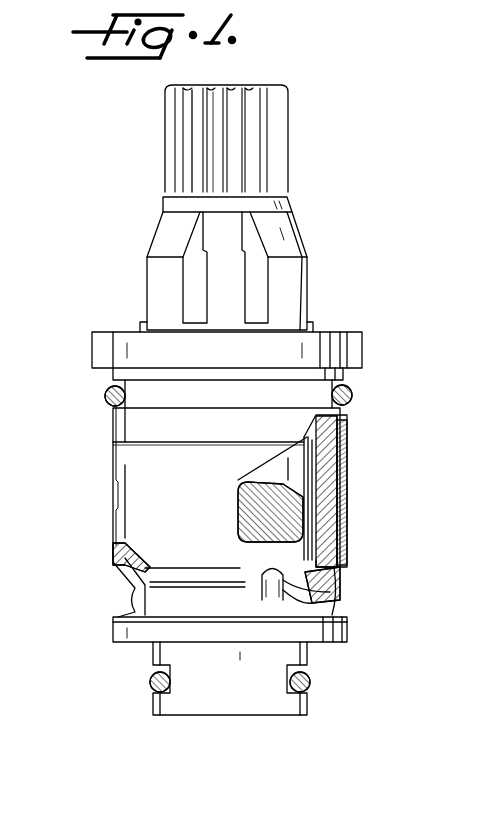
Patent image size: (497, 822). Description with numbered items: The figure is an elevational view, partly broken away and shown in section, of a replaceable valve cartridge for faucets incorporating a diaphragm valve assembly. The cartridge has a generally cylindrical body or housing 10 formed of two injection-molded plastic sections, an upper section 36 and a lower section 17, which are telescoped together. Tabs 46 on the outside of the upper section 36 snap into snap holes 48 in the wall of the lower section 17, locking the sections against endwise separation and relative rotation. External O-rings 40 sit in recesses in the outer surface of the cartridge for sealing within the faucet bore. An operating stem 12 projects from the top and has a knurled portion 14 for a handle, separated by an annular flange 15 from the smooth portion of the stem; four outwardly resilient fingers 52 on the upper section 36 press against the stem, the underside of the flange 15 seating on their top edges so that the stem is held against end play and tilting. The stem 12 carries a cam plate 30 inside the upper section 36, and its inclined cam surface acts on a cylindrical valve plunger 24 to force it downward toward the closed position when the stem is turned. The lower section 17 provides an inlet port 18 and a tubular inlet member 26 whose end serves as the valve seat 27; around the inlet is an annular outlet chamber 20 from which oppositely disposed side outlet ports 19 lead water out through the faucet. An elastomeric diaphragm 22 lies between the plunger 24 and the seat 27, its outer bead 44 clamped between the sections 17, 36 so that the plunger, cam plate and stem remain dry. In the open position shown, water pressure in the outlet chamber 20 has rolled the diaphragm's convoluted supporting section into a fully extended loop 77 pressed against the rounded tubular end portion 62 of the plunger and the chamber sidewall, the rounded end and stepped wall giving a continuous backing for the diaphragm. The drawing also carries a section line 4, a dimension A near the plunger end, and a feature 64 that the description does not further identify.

The body or housing 10 is at (355, 320).
The operating stem 12 is at (162, 152).
The knurled portion 14 is at (272, 146).
The annular flange 15 is at (170, 205).
The outwardly resilient fingers 52 is at (153, 276).
The external O-rings 40 is at (105, 390).
The section line 4- 4 is at (85, 421).
The cam plate 30 is at (340, 419).
The upper section 36 is at (336, 441).
The valve plunger 24 is at (336, 466).
The snap holes 48 is at (348, 478).
The tabs 46 is at (348, 500).
The loop 77 is at (340, 520).
The lower section 17 is at (341, 540).
The outer bead 44 is at (341, 556).
The diaphragm 22 is at (250, 484).
The dimension A is at (212, 496).
The tubular end portion of the plunger 62 is at (236, 546).
The valve seat shoulder 64 is at (247, 589).
The side outlet ports 19 is at (130, 601).
The inlet port 18 is at (270, 530).
The outlet chamber 20 is at (310, 625).
The tubular inlet member 26 is at (290, 596).
The valve seat 27 is at (322, 591).